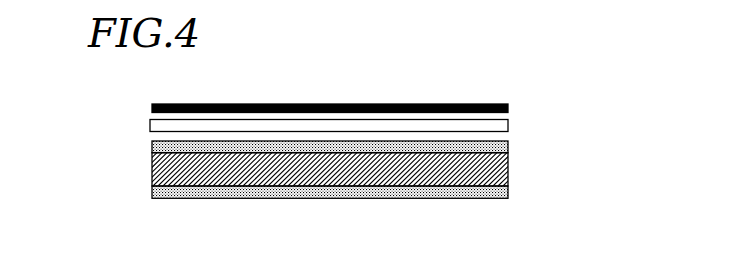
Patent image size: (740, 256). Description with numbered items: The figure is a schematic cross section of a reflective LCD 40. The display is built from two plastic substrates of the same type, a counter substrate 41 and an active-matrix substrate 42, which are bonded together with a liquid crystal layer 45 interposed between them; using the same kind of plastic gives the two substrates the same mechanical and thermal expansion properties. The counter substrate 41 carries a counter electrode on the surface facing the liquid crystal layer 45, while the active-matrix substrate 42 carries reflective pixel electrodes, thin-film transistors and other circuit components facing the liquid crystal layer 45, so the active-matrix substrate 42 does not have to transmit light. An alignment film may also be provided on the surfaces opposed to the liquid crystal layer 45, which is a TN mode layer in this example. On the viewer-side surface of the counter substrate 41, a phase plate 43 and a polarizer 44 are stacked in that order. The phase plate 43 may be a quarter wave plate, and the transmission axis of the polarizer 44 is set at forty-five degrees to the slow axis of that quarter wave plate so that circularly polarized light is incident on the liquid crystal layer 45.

The reflective LCD 40 is at (581, 97).
The counter substrate 41 is at (152, 151).
The active-matrix substrate 42 is at (152, 191).
The phase plate 43 is at (508, 128).
The polarizer 44 is at (490, 104).
The liquid crystal layer 45 is at (510, 168).